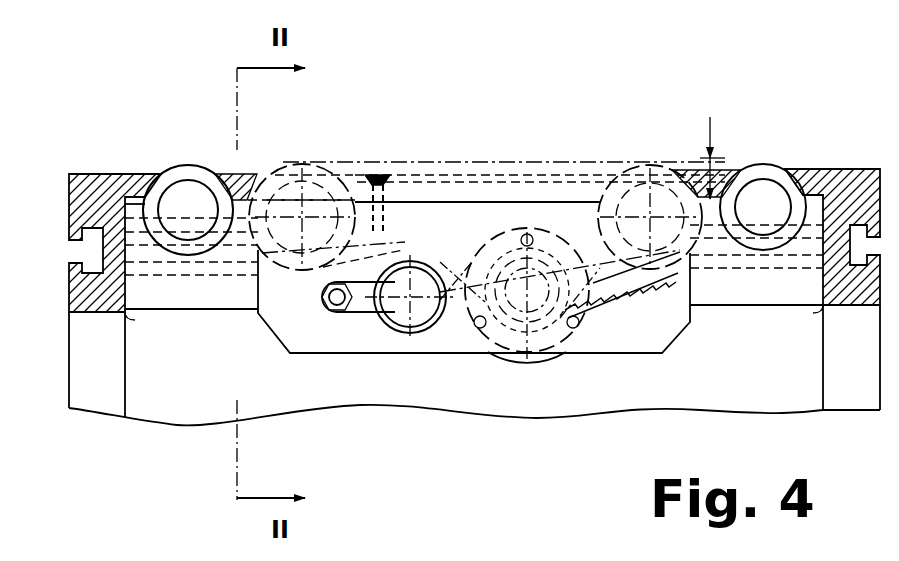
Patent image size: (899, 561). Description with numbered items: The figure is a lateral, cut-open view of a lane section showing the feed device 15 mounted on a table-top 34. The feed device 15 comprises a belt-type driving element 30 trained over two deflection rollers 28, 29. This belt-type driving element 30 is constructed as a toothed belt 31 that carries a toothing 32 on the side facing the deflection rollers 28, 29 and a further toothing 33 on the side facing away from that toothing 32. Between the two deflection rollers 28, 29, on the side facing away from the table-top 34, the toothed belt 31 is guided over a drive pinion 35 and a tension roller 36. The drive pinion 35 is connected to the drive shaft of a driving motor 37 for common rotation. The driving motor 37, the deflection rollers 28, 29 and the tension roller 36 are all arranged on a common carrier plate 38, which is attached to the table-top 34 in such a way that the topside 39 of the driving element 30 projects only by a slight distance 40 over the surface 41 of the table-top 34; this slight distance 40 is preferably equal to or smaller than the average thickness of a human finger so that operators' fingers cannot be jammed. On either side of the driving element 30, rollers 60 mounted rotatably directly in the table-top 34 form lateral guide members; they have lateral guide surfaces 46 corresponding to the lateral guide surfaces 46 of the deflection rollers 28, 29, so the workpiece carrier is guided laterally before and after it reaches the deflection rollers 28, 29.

The feed device 15 is at (483, 357).
The deflection roller 28 is at (629, 165).
The deflection roller 29 is at (345, 190).
The belt-type driving element 30 is at (621, 310).
The toothed belt 31 is at (601, 270).
The toothing 32 is at (582, 170).
The toothing 33 is at (645, 300).
The table-top 34 is at (100, 176).
The drive pinion 35 is at (545, 333).
The tension roller 36 is at (402, 322).
The driving motor 37 is at (525, 358).
The carrier plate 38 is at (322, 338).
The topside 39 is at (424, 158).
The slight distance 40 is at (712, 128).
The surface 41 is at (824, 166).
The lateral guide surfaces 46 is at (152, 215).
The rollers 60 is at (190, 222).